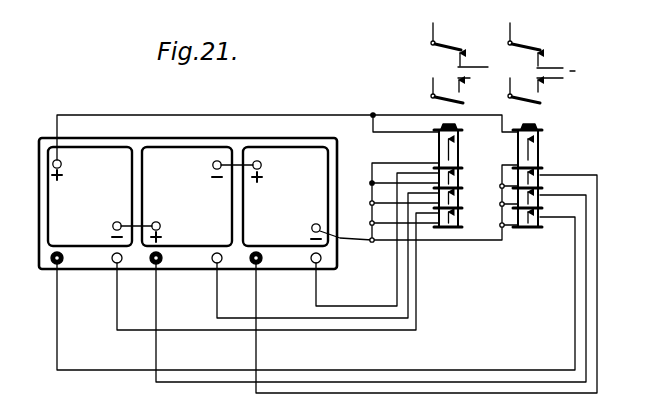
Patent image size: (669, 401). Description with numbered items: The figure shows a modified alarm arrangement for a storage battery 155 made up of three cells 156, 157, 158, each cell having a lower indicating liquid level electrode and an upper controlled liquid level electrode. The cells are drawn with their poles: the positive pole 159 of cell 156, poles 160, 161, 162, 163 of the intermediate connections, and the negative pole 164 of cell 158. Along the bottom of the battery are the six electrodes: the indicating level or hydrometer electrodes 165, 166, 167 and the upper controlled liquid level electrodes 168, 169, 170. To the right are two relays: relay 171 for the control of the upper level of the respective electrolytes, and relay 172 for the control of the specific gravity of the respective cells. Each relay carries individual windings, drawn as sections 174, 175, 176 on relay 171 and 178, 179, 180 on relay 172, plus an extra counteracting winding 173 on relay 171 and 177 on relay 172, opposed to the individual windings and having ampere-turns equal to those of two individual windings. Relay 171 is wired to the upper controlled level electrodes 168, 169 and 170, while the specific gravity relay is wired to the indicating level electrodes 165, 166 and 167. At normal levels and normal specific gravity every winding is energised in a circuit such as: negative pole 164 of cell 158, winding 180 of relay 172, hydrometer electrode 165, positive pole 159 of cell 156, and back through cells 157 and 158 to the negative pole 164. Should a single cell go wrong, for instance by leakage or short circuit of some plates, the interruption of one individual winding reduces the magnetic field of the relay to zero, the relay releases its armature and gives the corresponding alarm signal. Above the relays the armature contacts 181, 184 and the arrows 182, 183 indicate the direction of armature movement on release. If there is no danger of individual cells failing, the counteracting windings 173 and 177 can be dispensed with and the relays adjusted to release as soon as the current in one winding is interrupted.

The battery housing 155 is at (118, 139).
The cell 156 is at (72, 153).
The cell 157 is at (162, 153).
The cell 158 is at (259, 155).
The positive pole 159 is at (62, 166).
The negative terminal of first cell 160 is at (113, 223).
The positive terminal of second cell 161 is at (160, 224).
The negative terminal of second cell 162 is at (213, 169).
The positive terminal of third cell 163 is at (262, 169).
The negative pole 164 is at (312, 224).
The hydrometer electrode 165 is at (54, 266).
The indicating level electrode 166 is at (154, 266).
The indicating level electrode 167 is at (254, 266).
The upper controlled liquid level electrode 168 is at (115, 266).
The upper controlled liquid level electrode 169 is at (216, 266).
The upper controlled liquid level electrode 170 is at (314, 266).
The relay 171 is at (452, 125).
The relay 172 is at (535, 127).
The counteracting winding 173 is at (437, 143).
The winding section 174 is at (461, 181).
The winding section 175 is at (461, 202).
The winding section 176 is at (461, 224).
The counteracting winding 177 is at (542, 158).
The winding section 178 is at (541, 183).
The winding section 179 is at (541, 204).
The winding 180 is at (541, 220).
The switch contact 181 is at (437, 45).
The direction arrow 182 is at (463, 65).
The direction arrow 183 is at (467, 78).
The switch contact 184 is at (434, 98).